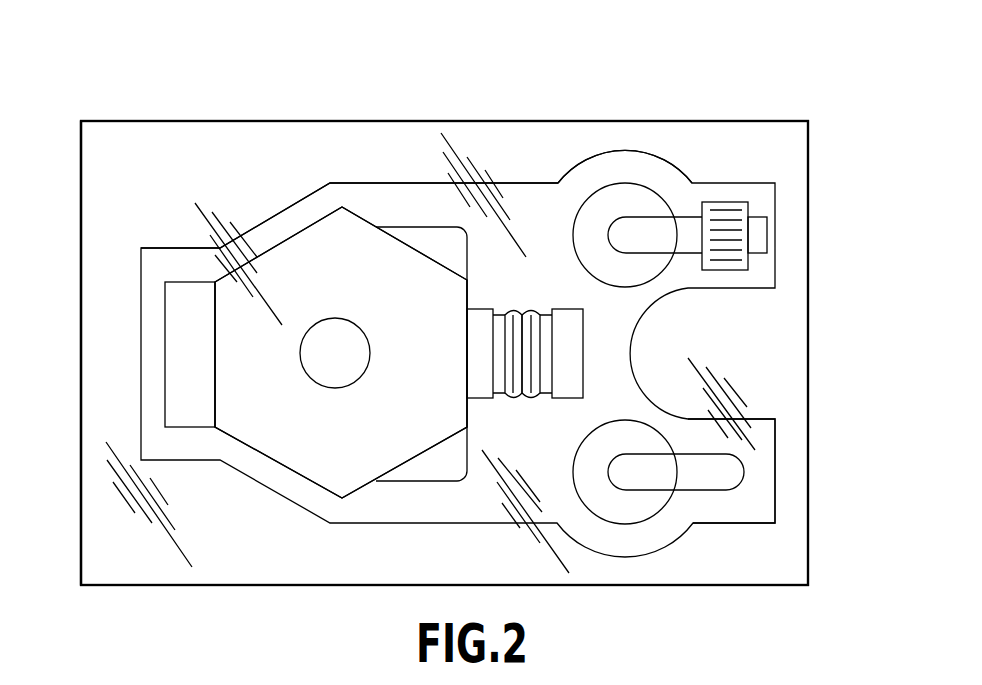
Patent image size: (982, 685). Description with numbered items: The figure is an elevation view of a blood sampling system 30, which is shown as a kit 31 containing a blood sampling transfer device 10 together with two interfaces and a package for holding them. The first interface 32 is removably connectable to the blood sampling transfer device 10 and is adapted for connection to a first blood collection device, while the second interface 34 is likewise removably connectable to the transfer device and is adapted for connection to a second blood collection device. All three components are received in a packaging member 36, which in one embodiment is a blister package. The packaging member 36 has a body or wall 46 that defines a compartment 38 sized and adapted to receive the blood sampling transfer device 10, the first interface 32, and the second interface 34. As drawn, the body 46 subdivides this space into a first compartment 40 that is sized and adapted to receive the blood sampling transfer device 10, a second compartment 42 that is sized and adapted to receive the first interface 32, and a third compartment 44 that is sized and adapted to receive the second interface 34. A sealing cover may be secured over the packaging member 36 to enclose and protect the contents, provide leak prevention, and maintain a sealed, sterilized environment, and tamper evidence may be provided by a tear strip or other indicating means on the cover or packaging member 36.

The blood sampling transfer device 10 is at (329, 287).
The blood sampling system 30 is at (148, 70).
The kit 31 is at (848, 140).
The first interface 32 is at (642, 233).
The second interface 34 is at (628, 474).
The packaging member 36 is at (81, 252).
The compartment 38 is at (535, 213).
The first compartment 40 is at (372, 500).
The second compartment 42 is at (621, 168).
The third compartment 44 is at (695, 502).
The body 46 is at (190, 150).